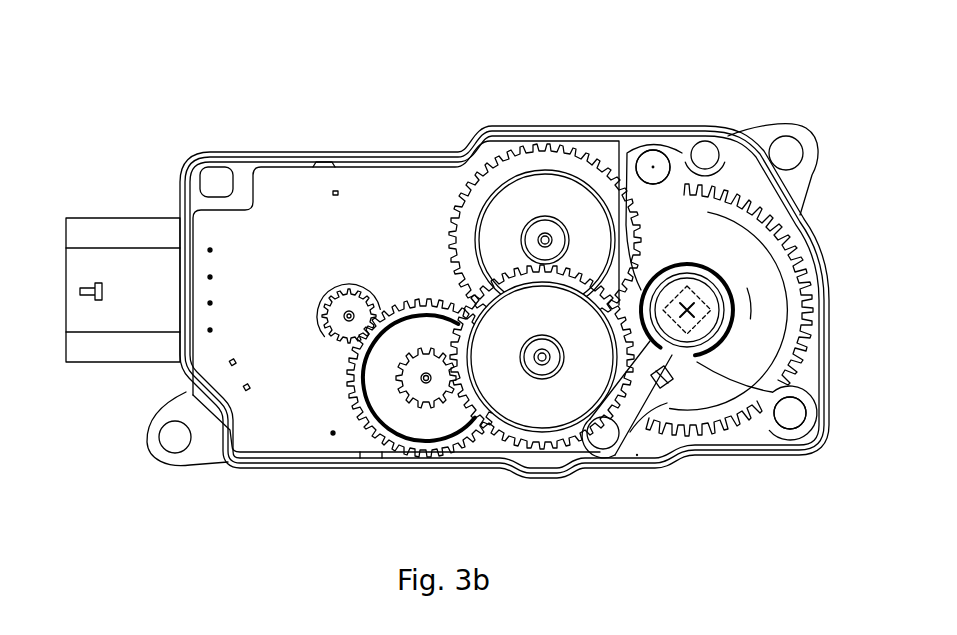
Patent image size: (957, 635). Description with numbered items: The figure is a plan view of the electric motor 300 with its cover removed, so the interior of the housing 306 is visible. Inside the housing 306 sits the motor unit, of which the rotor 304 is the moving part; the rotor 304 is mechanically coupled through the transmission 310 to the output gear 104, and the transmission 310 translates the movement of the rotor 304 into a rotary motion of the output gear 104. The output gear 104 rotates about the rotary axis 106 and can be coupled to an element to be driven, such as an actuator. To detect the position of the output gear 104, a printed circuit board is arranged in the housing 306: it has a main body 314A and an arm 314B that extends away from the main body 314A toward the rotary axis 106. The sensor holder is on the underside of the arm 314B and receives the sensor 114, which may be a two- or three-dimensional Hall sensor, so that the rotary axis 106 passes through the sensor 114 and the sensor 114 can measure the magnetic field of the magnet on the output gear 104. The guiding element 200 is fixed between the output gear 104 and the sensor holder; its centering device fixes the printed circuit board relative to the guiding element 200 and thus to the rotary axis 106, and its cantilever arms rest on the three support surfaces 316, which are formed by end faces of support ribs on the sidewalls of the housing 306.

The electric motor 300 is at (221, 74).
The housing 306 is at (385, 152).
The support surfaces 316 is at (629, 142).
The transmission 310 is at (424, 275).
The rotor 304 is at (332, 340).
The main body 314A is at (262, 310).
The arm 314B is at (672, 357).
The rotary axis 106 is at (683, 303).
The sensor 114 is at (706, 305).
The guiding element 200 is at (726, 334).
The output gear 104 is at (722, 440).